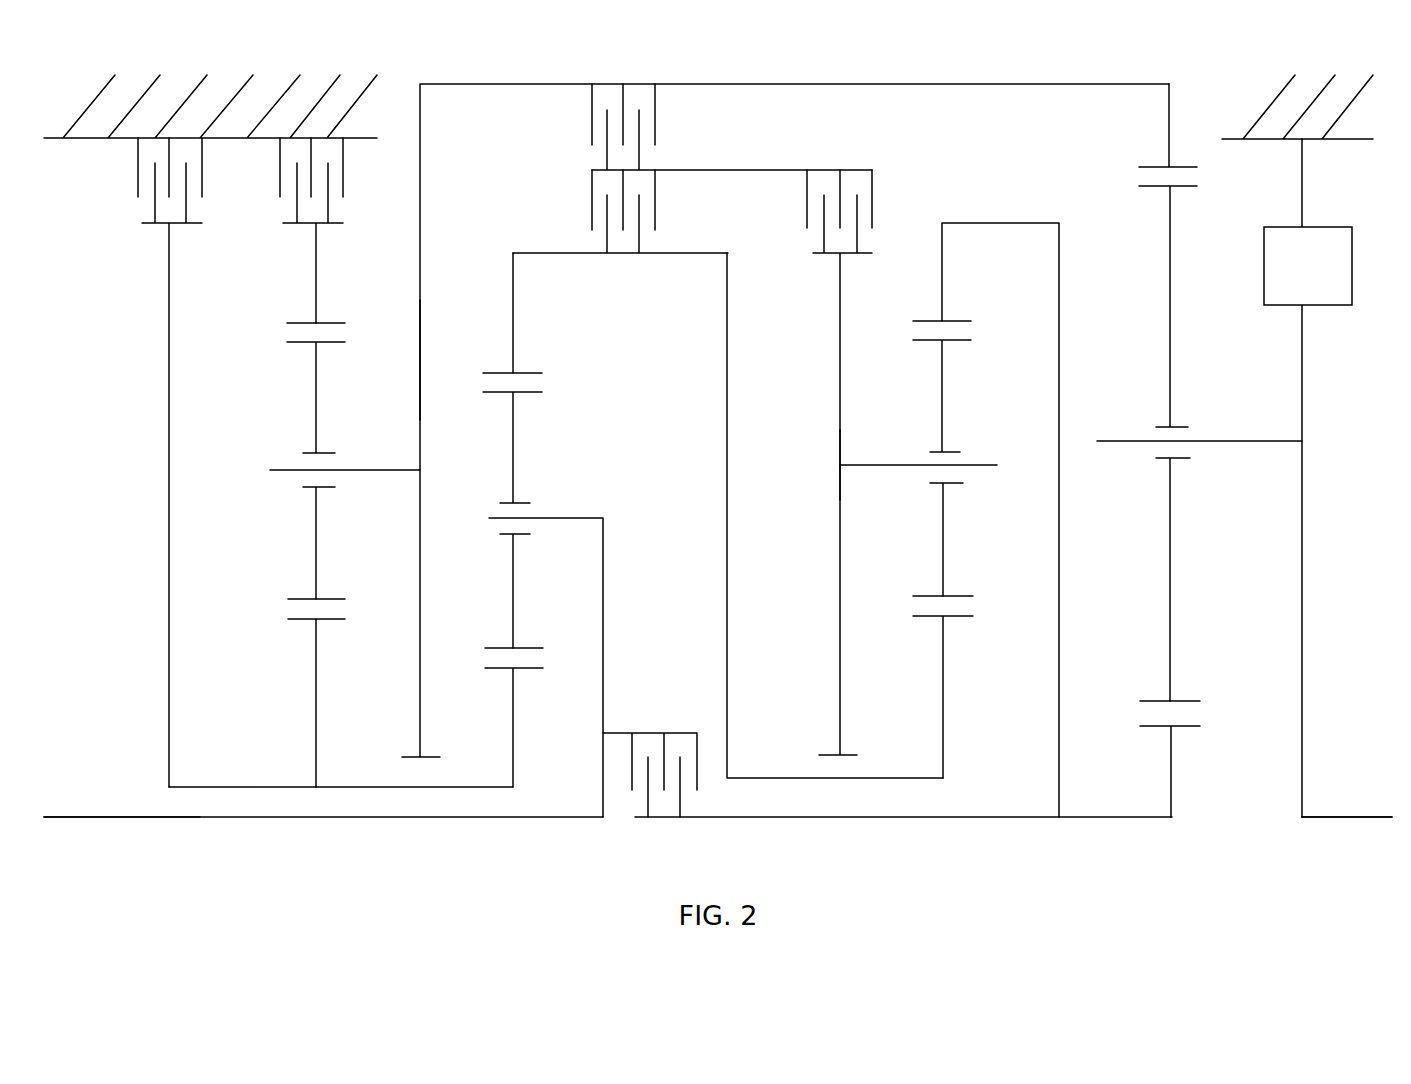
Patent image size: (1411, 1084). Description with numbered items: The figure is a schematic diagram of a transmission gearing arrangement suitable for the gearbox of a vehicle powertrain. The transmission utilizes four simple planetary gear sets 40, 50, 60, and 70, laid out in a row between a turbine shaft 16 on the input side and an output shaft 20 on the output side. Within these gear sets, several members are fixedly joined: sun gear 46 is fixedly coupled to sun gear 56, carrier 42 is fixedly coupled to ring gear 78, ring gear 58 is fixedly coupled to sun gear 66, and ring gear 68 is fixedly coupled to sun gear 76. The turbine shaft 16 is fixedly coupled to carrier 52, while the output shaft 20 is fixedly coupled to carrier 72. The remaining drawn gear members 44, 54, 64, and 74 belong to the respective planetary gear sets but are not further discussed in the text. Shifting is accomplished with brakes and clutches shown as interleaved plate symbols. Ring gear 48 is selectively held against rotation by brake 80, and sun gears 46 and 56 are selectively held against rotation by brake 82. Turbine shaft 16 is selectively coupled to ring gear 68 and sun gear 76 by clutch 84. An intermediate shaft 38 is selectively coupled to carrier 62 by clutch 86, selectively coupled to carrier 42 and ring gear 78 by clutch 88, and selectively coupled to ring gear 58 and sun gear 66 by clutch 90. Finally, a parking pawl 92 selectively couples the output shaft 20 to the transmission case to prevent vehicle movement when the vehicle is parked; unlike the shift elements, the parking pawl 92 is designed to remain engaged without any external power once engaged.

The turbine shaft 16 is at (162, 820).
The output shaft 20 is at (1367, 815).
The intermediate shaft 38 is at (767, 170).
The planetary gear set 40 is at (341, 835).
The carrier 42 is at (420, 270).
The sun gear 44 is at (320, 405).
The sun gear 46 is at (313, 663).
The ring gear 48 is at (317, 282).
The planetary gear set 50 is at (505, 868).
The carrier 52 is at (605, 618).
The sun gear 54 is at (515, 457).
The sun gear 56 is at (510, 712).
The ring gear 58 is at (513, 332).
The planetary gear set 60 is at (995, 552).
The carrier 62 is at (840, 432).
The sun gear 64 is at (947, 403).
The sun gear 66 is at (942, 660).
The ring gear 68 is at (943, 282).
The planetary gear set 70 is at (1175, 869).
The carrier 72 is at (1302, 488).
The sun gear 74 is at (1173, 372).
The sun gear 76 is at (1170, 773).
The ring gear 78 is at (1169, 137).
The brake 80 is at (280, 163).
The brake 82 is at (133, 163).
The clutch 84 is at (675, 733).
The clutch 86 is at (825, 170).
The clutch 88 is at (592, 133).
The clutch 90 is at (592, 195).
The parking pawl 92 is at (1352, 278).